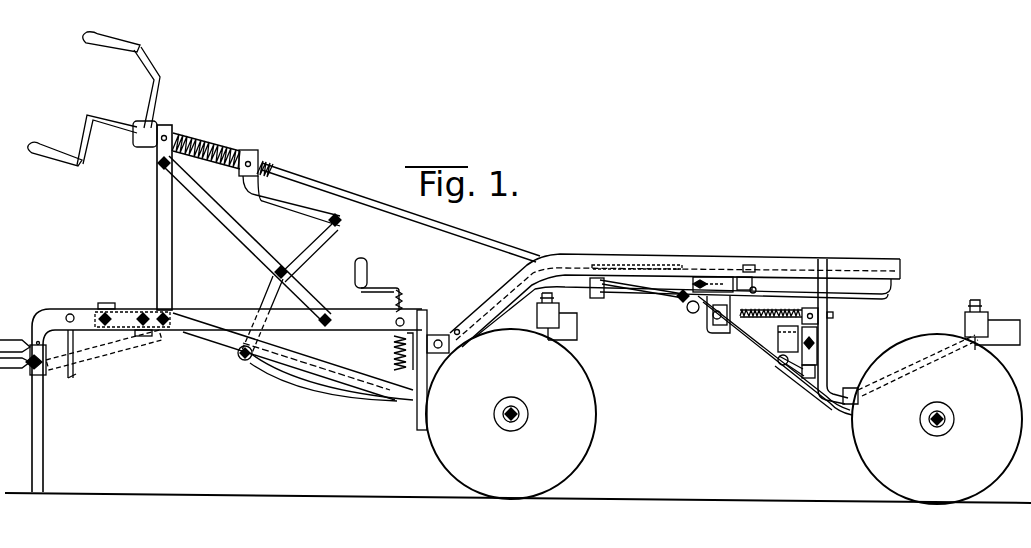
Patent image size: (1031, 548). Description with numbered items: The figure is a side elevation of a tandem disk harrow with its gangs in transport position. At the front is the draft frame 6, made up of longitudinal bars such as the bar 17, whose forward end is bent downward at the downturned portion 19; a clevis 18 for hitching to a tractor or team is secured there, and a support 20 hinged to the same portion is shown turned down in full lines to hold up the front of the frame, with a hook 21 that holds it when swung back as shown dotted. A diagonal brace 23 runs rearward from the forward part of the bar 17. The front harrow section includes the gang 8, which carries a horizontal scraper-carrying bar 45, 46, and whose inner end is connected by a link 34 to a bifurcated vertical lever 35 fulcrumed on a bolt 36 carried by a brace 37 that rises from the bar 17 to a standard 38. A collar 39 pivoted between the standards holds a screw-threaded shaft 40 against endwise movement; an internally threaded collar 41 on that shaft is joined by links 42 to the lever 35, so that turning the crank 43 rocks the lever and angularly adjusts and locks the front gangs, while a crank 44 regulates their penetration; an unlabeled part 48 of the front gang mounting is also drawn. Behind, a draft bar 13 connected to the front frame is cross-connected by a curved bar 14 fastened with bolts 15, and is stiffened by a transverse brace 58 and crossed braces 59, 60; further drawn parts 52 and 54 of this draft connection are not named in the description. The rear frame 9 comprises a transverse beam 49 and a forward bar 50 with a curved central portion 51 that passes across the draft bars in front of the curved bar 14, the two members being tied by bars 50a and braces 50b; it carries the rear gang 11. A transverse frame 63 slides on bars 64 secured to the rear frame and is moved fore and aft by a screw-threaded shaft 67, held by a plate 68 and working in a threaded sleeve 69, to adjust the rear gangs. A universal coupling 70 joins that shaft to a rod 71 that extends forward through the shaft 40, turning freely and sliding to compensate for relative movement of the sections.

The front frame 6 is at (480, 296).
The gang 8 is at (432, 458).
The rear frame 9 is at (700, 277).
The gang 11 is at (858, 463).
The draft bar 13 is at (582, 257).
The curved bar 14 is at (743, 276).
The bolt 15 is at (752, 264).
The bar 17 is at (364, 330).
The clevis 18 is at (18, 345).
The downturned portion 19 is at (40, 330).
The support 20 is at (44, 428).
The hook 21 is at (72, 368).
The diagonal brace 23 is at (310, 368).
The link 34 is at (348, 400).
The lever 35 is at (264, 293).
The bolt 36 is at (290, 272).
The brace 37 is at (238, 241).
The standard 38 is at (157, 245).
The collar 39 is at (172, 133).
The screw-threaded shaft 40 is at (228, 149).
The internally threaded collar 41 is at (262, 154).
The link 42 is at (272, 173).
The crank 43 is at (160, 81).
The crank 44 is at (402, 291).
The scraper-carrying bar 45 is at (443, 342).
The scraper-carrying bar 46 is at (563, 319).
The standard 48 is at (430, 330).
The transverse beam 49 is at (827, 281).
The bar 50 is at (668, 273).
The bar 50a is at (808, 399).
The brace 50b is at (795, 382).
The curved central portion 51 is at (712, 275).
The rail 52 is at (762, 295).
The bolt 54 is at (757, 287).
The transverse brace 58 is at (590, 284).
The crossed brace 59 is at (620, 265).
The crossed brace 60 is at (632, 270).
The transverse frame 63 is at (778, 352).
The bar 64 is at (748, 352).
The screw-threaded shaft 67 is at (835, 315).
The plate 68 is at (728, 336).
The threaded sleeve 69 is at (827, 321).
The universal coupling 70 is at (712, 334).
The rod 71 is at (508, 247).